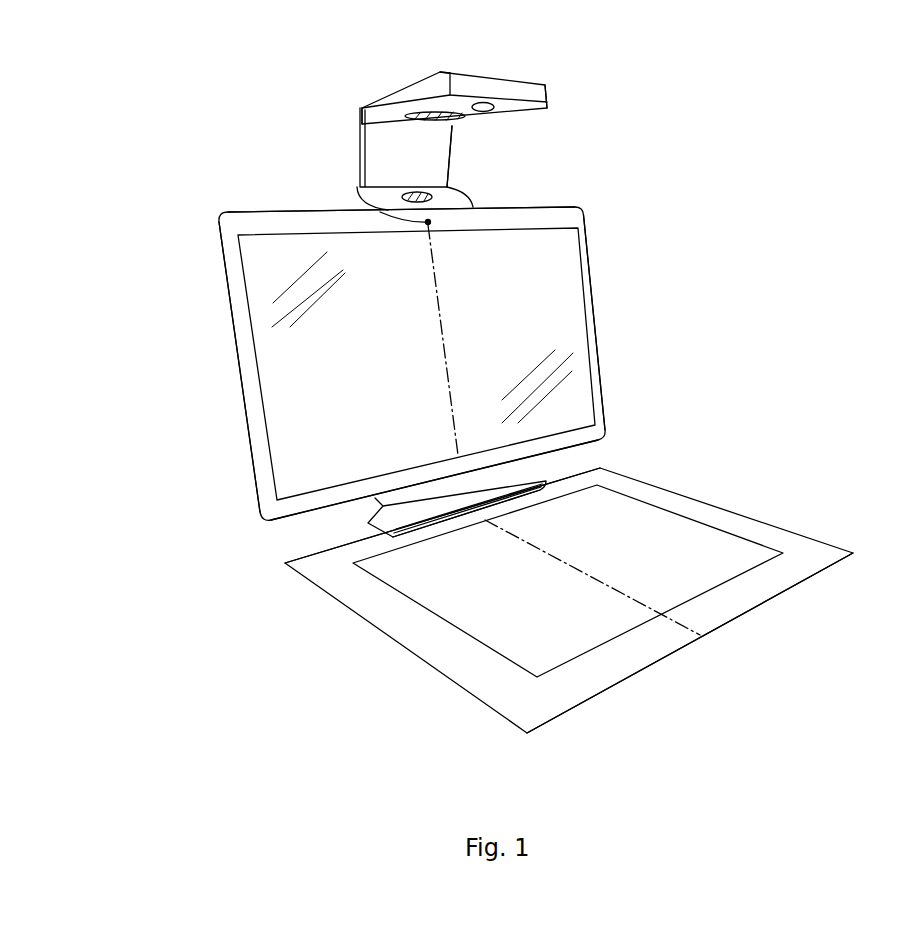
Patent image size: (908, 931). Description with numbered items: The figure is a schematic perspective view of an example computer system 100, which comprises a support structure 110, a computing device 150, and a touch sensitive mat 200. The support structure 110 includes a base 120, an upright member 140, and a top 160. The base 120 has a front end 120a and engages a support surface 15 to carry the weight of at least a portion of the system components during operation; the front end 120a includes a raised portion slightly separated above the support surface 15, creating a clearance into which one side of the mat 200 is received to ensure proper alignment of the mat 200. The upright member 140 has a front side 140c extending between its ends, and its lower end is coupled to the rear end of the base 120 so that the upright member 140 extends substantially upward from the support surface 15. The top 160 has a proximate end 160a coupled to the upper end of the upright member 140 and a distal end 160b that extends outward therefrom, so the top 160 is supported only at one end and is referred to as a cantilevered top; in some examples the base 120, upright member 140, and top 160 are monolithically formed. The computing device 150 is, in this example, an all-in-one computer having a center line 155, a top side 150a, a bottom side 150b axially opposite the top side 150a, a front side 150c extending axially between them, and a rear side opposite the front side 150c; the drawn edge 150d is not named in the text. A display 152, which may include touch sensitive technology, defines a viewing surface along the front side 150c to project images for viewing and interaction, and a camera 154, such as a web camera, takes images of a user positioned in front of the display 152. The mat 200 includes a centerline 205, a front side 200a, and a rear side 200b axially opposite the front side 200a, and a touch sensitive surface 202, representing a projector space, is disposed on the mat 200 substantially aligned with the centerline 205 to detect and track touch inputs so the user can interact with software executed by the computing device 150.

The support surface 15 is at (373, 737).
The system 100 is at (717, 148).
The support structure 110 is at (218, 182).
The base 120 is at (367, 522).
The front end 120a is at (455, 527).
The upright member 140 is at (355, 168).
The front side 140c is at (435, 140).
The computing device 150 is at (424, 346).
The top side 150a is at (562, 195).
The bottom side 150b is at (573, 448).
The front side 150c is at (573, 363).
The left edge of display housing 150d is at (227, 328).
The display 152 is at (328, 335).
The camera 154 is at (357, 207).
The center line 155 is at (450, 333).
The top 160 is at (457, 63).
The proximate end 160a is at (363, 108).
The distal end 160b is at (545, 88).
The touch sensitive mat 200 is at (790, 533).
The front side 200a is at (590, 695).
The rear side 200b is at (285, 562).
The touch sensitive surface 202 is at (693, 573).
The centerline 205 is at (562, 560).